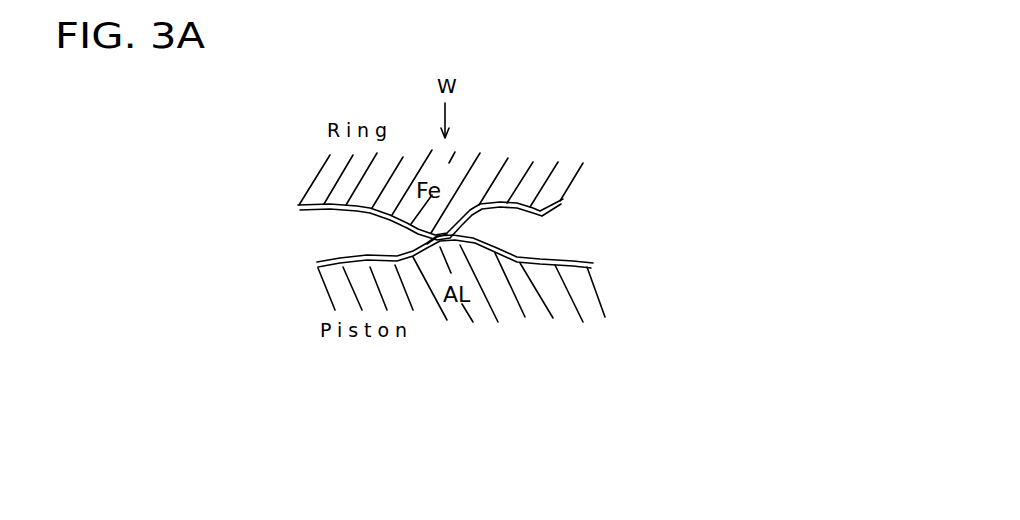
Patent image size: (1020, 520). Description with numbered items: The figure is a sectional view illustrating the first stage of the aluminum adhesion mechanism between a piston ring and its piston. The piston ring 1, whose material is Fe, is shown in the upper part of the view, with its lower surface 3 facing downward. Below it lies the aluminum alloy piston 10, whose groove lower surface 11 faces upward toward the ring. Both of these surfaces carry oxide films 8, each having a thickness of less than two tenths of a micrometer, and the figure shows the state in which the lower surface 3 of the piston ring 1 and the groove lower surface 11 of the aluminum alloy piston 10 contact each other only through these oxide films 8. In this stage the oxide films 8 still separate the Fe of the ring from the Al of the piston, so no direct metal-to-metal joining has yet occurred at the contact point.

The piston ring 1 is at (566, 178).
The lower surface 3 is at (513, 211).
The oxide film 8 is at (298, 206).
The aluminum alloy piston 10 is at (587, 305).
The groove lower surface 11 is at (358, 260).